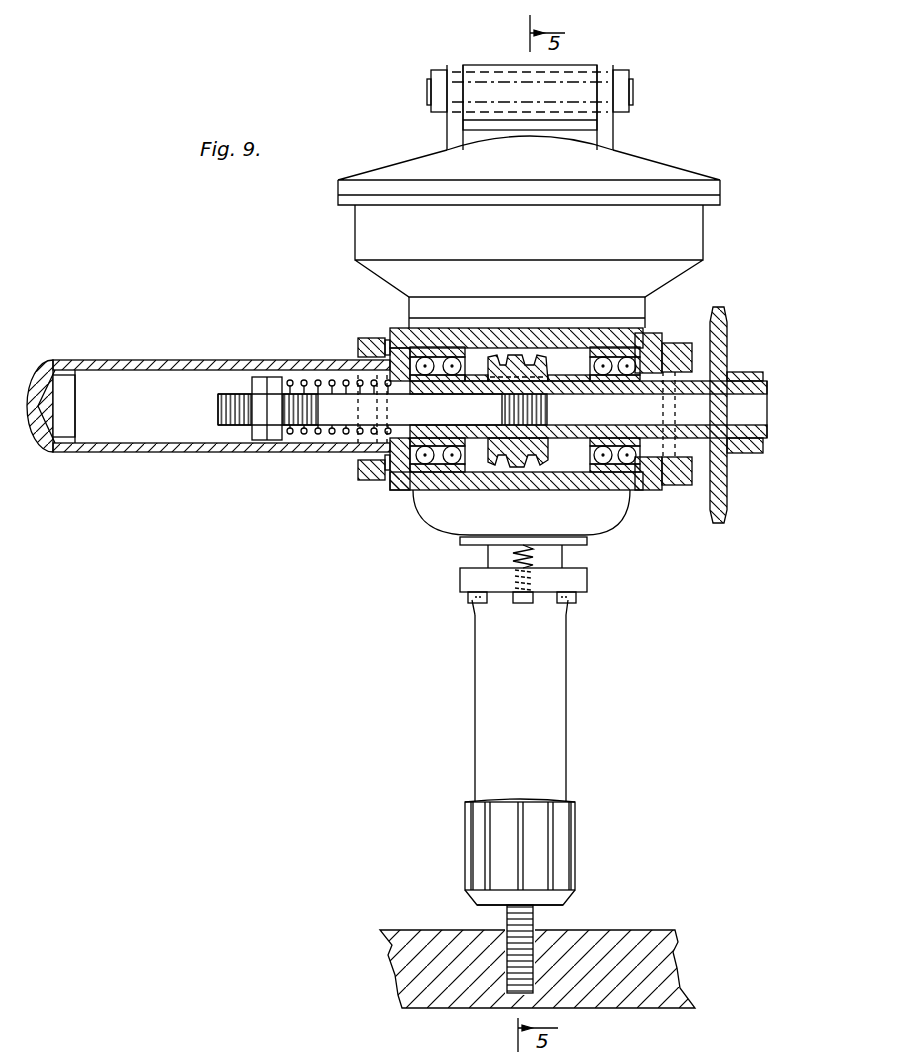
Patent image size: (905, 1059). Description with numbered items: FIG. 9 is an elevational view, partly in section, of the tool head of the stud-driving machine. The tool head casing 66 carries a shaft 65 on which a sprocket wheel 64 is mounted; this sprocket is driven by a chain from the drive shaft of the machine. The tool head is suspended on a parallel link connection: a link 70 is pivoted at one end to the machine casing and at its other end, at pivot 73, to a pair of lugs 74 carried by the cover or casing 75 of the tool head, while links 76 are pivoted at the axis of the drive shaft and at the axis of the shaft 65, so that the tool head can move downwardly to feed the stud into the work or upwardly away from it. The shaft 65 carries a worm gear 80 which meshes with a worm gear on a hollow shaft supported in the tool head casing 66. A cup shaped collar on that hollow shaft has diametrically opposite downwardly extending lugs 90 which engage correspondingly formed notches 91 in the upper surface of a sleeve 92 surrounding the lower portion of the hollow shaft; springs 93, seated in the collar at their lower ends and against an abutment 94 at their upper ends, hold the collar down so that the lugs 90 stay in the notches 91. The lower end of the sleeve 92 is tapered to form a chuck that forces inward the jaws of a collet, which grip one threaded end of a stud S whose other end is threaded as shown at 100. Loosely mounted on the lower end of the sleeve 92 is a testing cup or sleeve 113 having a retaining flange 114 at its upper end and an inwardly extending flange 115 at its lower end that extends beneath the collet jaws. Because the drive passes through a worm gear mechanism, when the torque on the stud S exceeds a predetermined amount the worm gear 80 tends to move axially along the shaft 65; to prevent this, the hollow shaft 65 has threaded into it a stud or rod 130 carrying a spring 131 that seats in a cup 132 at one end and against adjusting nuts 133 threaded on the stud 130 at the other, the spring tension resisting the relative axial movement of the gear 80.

The link 70 is at (492, 64).
The pivot 73 is at (568, 90).
The lugs 74 is at (445, 90).
The cover or casing 75 is at (661, 172).
The cup 132 is at (397, 333).
The worm gear 80 is at (521, 357).
The sprocket wheel 64 is at (728, 316).
The shaft 65 is at (743, 441).
The links 76 is at (368, 483).
The tool head casing 66 is at (472, 484).
The springs 93 is at (500, 549).
The abutment 94 is at (587, 543).
The lugs 90 is at (467, 597).
The notches 91 is at (472, 604).
The sleeve 92 is at (487, 698).
The cylindrical cup or sleeve 113 is at (465, 853).
The retaining flange 114 is at (572, 805).
The inwardly extending flange 115 is at (548, 907).
The threaded end 100 is at (508, 919).
The stud S is at (535, 922).
The adjusting nuts 133 is at (268, 441).
The spring 131 is at (297, 440).
The stud or rod 130 is at (335, 413).